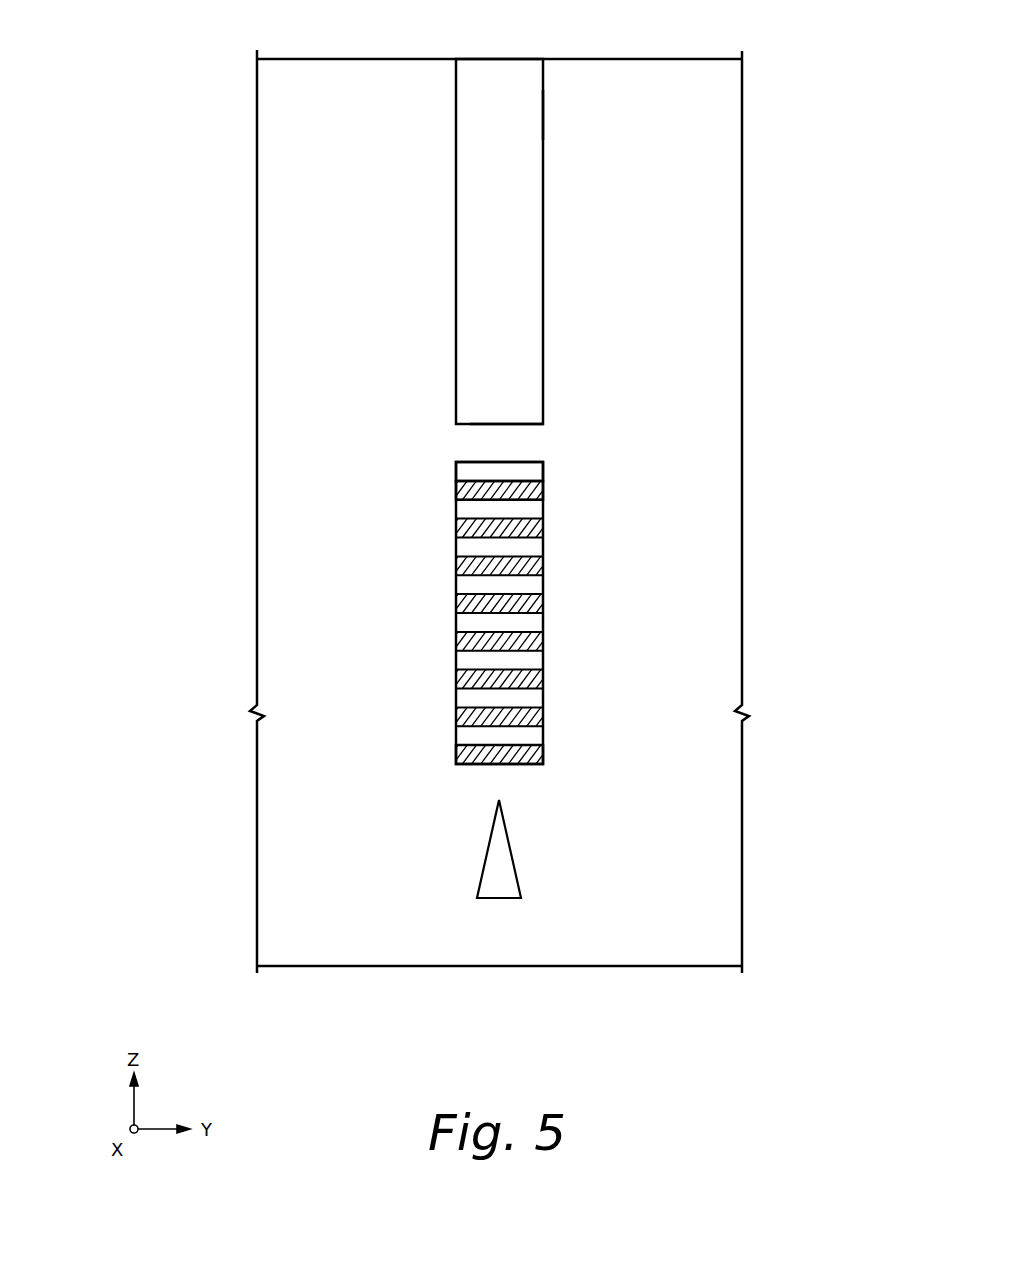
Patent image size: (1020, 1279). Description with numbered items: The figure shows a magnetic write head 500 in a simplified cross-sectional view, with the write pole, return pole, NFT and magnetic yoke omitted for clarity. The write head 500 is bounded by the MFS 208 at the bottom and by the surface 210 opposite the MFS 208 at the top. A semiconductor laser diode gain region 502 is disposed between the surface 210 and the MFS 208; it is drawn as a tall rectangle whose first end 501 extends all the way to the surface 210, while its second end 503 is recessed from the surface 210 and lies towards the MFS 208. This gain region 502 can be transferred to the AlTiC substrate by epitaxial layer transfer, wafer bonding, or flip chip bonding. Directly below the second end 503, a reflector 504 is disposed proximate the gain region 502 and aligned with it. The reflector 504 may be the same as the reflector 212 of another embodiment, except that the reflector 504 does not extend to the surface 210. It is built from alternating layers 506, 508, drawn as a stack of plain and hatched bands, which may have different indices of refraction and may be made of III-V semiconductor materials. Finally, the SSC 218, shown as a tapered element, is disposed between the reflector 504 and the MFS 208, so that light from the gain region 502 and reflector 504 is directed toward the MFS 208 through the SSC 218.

The magnetic write head 500 is at (167, 447).
The surface 210 is at (343, 58).
The MFS 208 is at (501, 966).
The first end 501 is at (498, 58).
The semiconductor laser diode gain region 502 is at (525, 117).
The second end 503 is at (522, 424).
The reflector 504 is at (506, 628).
The layer 506 is at (462, 470).
The layer 508 is at (462, 489).
The reflector 212 is at (520, 764).
The SSC 218 is at (502, 865).